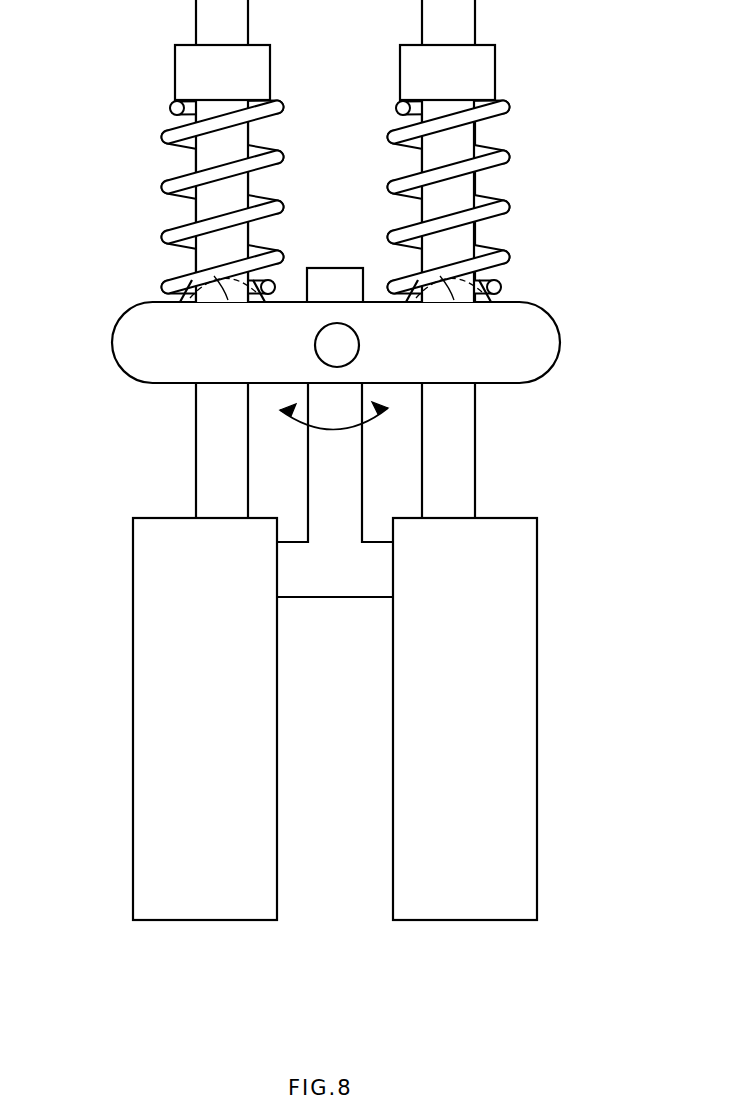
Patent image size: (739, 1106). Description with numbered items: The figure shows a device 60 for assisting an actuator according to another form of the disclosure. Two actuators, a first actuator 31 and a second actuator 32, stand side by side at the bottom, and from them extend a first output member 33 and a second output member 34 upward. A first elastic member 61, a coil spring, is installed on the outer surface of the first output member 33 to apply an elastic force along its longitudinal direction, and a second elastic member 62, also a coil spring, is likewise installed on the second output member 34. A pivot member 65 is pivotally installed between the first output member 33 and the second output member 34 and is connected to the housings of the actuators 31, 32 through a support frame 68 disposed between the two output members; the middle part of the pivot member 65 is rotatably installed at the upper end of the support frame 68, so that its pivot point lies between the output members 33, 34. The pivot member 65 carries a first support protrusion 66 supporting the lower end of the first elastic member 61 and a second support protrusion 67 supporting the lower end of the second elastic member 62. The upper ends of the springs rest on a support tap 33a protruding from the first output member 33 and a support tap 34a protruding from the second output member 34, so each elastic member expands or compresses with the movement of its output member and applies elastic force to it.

The device for assisting an actuator 60 is at (320, 241).
The pivot member 65 is at (545, 343).
The first elastic member 61 is at (490, 210).
The second elastic member 62 is at (182, 185).
The first support protrusion 66 is at (495, 272).
The second support protrusion 67 is at (196, 273).
The support frame 68 is at (336, 580).
The first actuator 31 is at (525, 750).
The second actuator 32 is at (145, 750).
The first output member 33 is at (462, 453).
The second output member 34 is at (210, 453).
The support tap 33a is at (485, 74).
The support tap 34a is at (185, 73).